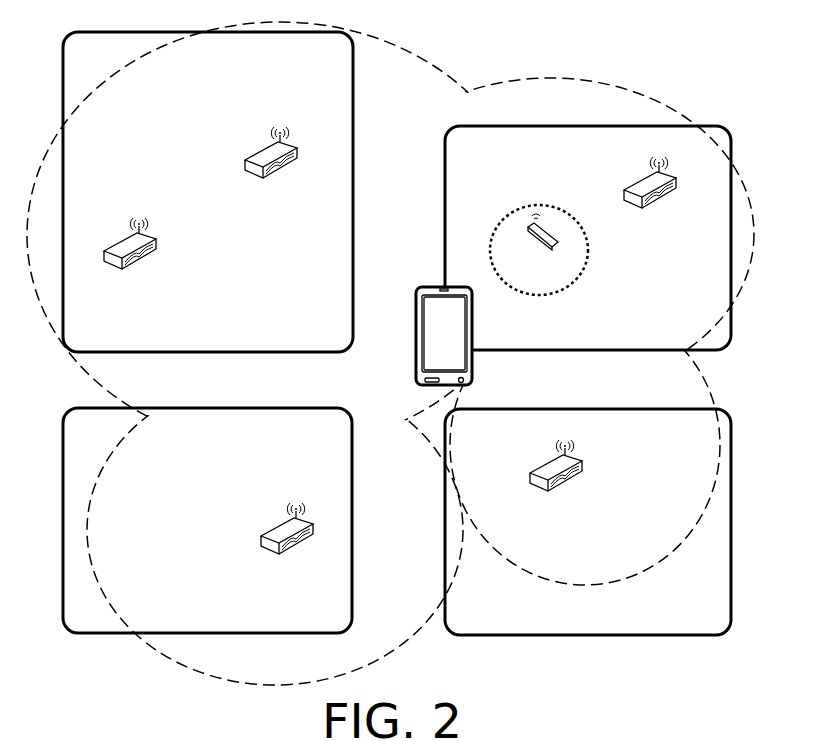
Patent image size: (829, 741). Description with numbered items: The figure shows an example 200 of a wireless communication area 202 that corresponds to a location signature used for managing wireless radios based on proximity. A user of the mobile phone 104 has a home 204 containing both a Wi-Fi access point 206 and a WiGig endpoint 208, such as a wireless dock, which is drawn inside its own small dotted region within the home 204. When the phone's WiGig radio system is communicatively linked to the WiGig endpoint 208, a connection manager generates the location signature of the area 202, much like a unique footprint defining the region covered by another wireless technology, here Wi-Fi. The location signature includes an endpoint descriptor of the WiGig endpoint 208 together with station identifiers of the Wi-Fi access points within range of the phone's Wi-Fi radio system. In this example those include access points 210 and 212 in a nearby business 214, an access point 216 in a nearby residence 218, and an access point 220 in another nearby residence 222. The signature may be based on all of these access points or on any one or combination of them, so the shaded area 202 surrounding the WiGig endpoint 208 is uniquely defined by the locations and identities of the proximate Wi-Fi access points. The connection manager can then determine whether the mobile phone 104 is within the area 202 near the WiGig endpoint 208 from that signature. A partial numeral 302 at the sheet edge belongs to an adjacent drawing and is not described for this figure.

The mobile phone 104 is at (427, 363).
The example 200 is at (544, 58).
The wireless communication area 202 is at (420, 62).
The home 204 is at (571, 333).
The Wi-Fi access point 206 is at (632, 241).
The WiGig endpoint 208 is at (522, 276).
The access point 210 is at (253, 206).
The access point 212 is at (112, 305).
The business 214 is at (190, 331).
The access point 216 is at (269, 588).
The residence 218 is at (190, 616).
The access point 220 is at (538, 525).
The residence 222 is at (571, 616).
The partial numeral from adjacent figure 302 is at (665, 734).